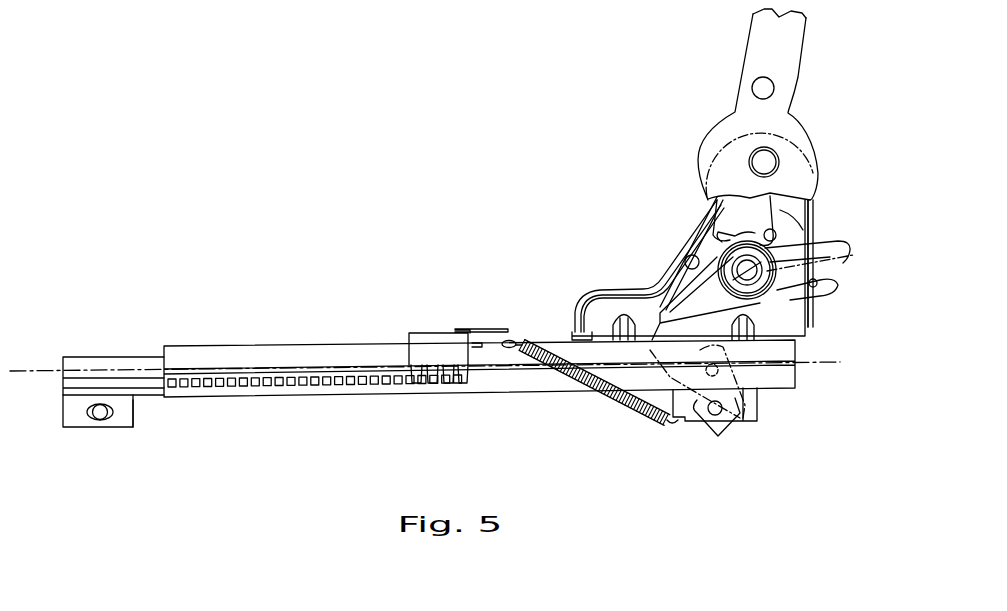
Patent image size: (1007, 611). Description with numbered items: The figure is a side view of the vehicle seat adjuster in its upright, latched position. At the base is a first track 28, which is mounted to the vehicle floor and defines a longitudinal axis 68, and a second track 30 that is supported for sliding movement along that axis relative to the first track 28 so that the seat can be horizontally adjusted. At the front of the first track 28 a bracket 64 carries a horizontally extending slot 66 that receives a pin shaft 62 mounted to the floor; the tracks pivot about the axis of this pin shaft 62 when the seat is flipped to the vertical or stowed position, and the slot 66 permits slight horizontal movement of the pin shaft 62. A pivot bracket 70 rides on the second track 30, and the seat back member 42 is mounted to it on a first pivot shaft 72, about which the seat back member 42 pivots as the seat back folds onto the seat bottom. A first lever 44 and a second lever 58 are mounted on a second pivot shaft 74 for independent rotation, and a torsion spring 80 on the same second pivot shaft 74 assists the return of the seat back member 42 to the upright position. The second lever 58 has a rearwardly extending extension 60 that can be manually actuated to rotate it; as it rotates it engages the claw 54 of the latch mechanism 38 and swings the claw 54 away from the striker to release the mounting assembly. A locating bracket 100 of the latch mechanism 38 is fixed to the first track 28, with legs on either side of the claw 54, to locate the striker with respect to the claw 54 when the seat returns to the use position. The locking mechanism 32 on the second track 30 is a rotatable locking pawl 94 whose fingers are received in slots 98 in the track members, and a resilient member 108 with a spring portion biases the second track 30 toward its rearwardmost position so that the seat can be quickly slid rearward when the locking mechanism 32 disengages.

The first track 28 is at (138, 357).
The second track 30 is at (216, 346).
The locking mechanism 32 is at (441, 316).
The latch mechanism 38 is at (712, 319).
The seat back member 42 is at (759, 127).
The first lever 44 is at (712, 210).
The claw 54 is at (713, 433).
The second lever 58 is at (672, 300).
The extension 60 is at (845, 262).
The pin shaft 62 is at (101, 420).
The bracket 64 is at (132, 416).
The slot 66 is at (113, 419).
The longitudinal axis 68 is at (803, 359).
The pivot bracket 70 is at (640, 288).
The first pivot shaft 72 is at (772, 162).
The second pivot shaft 74 is at (688, 211).
The torsion spring 80 is at (816, 215).
The locking pawl 94 is at (423, 338).
The slots 98 is at (359, 387).
The locating bracket 100 is at (759, 398).
The resilient member 108 is at (637, 409).